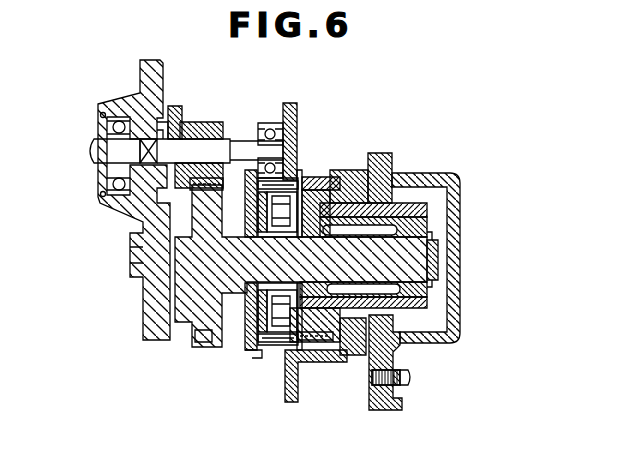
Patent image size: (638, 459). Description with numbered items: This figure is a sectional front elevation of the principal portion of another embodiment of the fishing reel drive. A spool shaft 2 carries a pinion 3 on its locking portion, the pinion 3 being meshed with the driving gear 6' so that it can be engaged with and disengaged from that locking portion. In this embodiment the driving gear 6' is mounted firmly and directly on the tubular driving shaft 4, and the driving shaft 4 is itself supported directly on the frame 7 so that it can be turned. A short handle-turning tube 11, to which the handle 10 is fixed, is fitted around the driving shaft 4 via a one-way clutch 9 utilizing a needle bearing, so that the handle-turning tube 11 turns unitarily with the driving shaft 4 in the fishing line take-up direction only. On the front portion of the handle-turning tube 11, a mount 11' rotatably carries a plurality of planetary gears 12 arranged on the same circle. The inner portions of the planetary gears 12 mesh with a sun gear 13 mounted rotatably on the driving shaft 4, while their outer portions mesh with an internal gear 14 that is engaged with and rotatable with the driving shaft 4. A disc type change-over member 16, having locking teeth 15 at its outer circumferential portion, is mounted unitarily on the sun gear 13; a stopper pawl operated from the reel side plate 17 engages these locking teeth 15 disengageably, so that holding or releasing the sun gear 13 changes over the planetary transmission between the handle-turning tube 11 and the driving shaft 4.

The spool shaft 2 is at (236, 141).
The pinion 3 is at (190, 122).
The driving shaft 4 is at (423, 257).
The rotor disk 6' is at (301, 283).
The frame 7 is at (148, 313).
The one-way clutch 9 is at (378, 205).
The handle 10 is at (383, 410).
The handle-turning tube 11 is at (357, 354).
The mount 11' is at (358, 229).
The planetary gears 12 is at (280, 338).
The sun gear 13 is at (248, 305).
The internal gear 14 is at (322, 185).
The locking teeth 15 is at (255, 352).
The disc type change-over member 16 is at (245, 346).
The reel side plate 17 is at (298, 120).